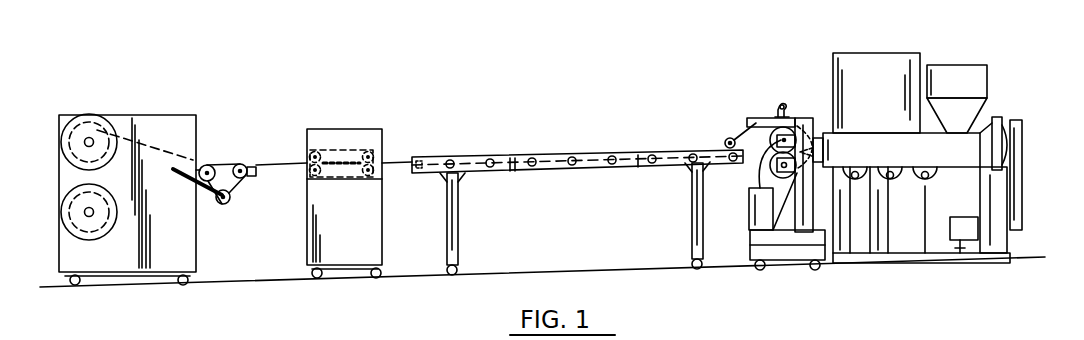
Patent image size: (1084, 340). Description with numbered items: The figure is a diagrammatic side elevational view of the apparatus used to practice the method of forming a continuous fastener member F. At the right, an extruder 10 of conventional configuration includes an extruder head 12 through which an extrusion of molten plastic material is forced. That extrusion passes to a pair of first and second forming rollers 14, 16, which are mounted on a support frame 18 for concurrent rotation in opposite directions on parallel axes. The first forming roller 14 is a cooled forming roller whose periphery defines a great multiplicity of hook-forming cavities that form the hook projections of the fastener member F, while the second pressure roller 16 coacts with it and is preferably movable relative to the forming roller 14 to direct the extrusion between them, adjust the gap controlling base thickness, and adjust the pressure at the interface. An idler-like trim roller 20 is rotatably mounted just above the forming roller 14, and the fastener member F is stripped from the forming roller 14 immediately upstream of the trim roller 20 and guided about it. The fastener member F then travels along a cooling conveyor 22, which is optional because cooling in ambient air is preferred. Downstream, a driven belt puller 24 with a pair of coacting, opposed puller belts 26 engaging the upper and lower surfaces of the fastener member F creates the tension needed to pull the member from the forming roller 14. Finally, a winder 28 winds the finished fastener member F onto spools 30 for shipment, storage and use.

The extruder 10 is at (936, 47).
The extruder head 12 is at (803, 137).
The first forming roller 14 is at (777, 137).
The second pressure roller 16 is at (757, 170).
The support frame 18 is at (815, 204).
The trim roller 20 is at (784, 107).
The cooling conveyor 22 is at (568, 148).
The driven belt puller 24 is at (366, 127).
The puller belts 26 is at (344, 149).
The winder 28 is at (199, 117).
The spools 30 is at (117, 148).
The fastener member F is at (257, 160).